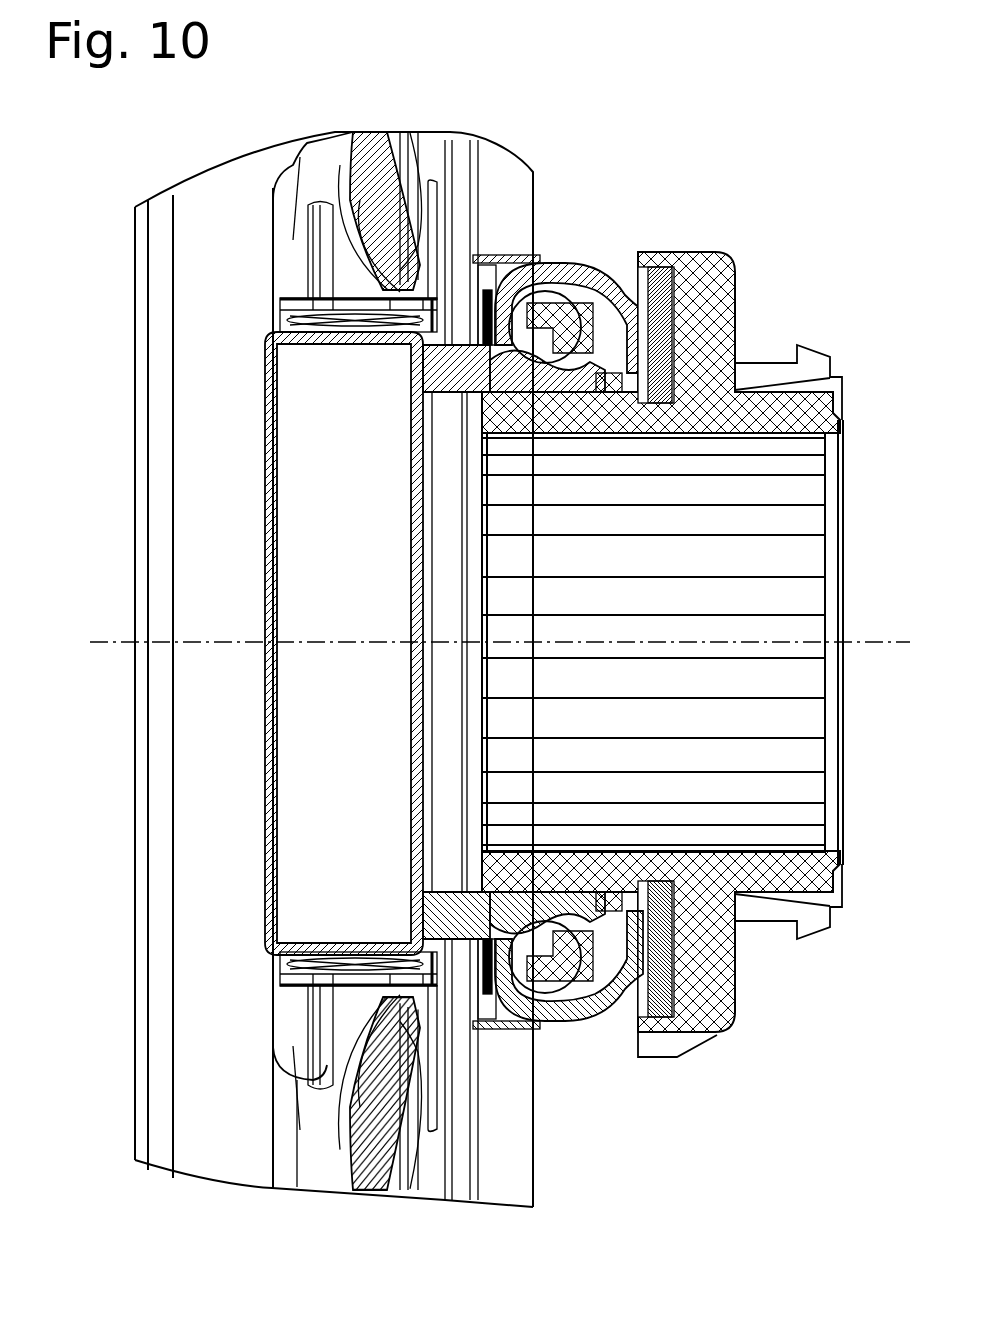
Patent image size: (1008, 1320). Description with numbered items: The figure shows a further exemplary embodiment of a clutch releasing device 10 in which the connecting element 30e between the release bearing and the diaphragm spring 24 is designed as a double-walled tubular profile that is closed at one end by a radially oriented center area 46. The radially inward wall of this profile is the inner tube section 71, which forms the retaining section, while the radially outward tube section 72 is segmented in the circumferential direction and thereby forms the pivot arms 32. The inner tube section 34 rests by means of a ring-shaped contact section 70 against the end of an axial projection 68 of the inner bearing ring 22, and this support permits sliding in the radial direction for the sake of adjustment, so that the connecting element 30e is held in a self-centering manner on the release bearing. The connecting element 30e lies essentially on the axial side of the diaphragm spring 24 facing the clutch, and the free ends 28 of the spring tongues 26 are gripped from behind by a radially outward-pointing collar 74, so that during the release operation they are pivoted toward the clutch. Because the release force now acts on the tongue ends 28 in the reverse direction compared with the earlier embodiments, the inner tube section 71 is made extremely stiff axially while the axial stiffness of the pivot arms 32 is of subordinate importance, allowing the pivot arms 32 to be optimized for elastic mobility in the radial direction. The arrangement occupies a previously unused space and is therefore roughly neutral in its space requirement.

The releasing device 10 is at (667, 184).
The inner bearing ring 22 is at (503, 893).
The diaphragm spring 24 is at (375, 143).
The spring tongues 26 is at (353, 143).
The free ends of the spring tongues 28 is at (435, 218).
The connecting element 30e is at (250, 340).
The pivot arms 32 is at (325, 984).
The inner tube section 34 is at (337, 346).
The center area 46 is at (263, 323).
The axial projection 68 is at (457, 394).
The ring-shaped contact section 70 is at (420, 912).
The inner tube section 71 is at (375, 372).
The outer tube section 72 is at (333, 1018).
The collar 74 is at (465, 258).